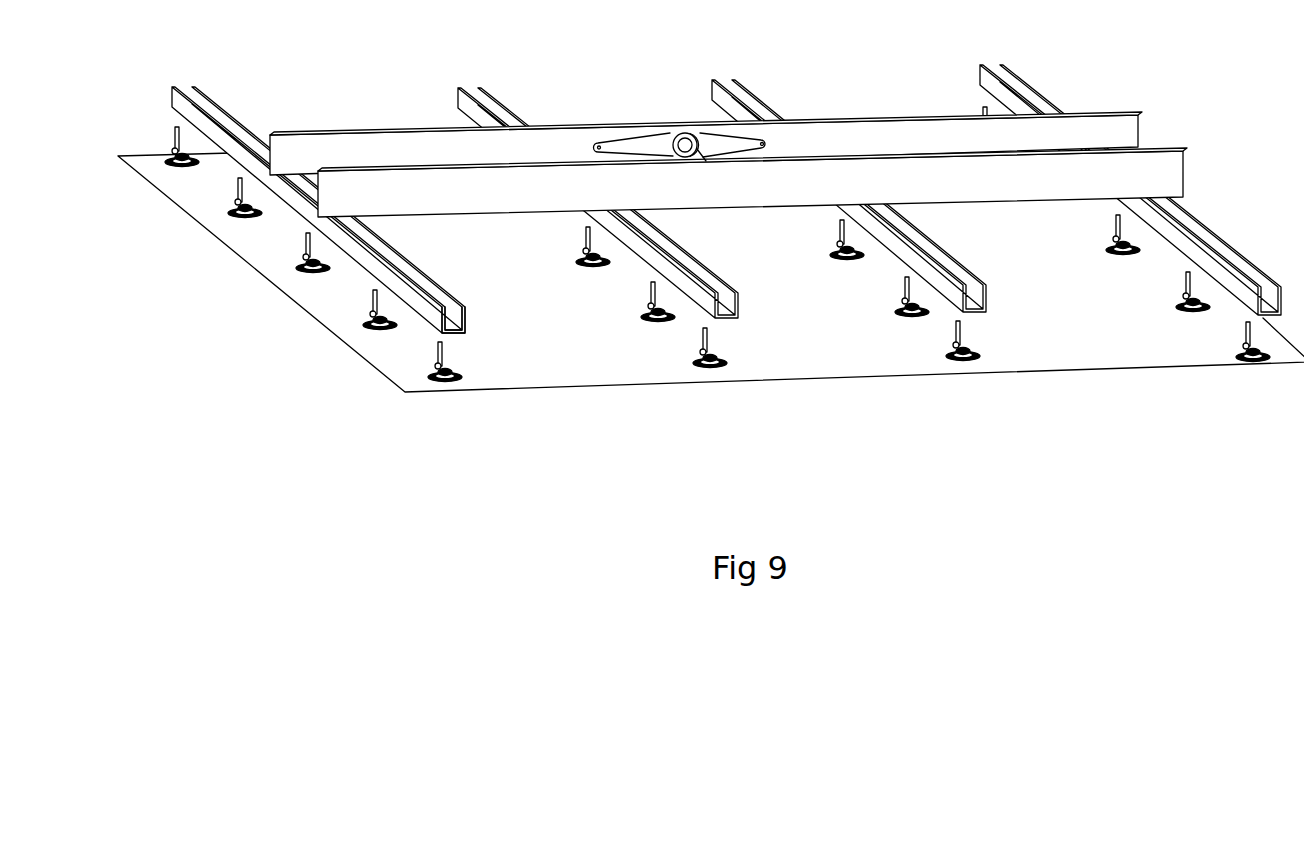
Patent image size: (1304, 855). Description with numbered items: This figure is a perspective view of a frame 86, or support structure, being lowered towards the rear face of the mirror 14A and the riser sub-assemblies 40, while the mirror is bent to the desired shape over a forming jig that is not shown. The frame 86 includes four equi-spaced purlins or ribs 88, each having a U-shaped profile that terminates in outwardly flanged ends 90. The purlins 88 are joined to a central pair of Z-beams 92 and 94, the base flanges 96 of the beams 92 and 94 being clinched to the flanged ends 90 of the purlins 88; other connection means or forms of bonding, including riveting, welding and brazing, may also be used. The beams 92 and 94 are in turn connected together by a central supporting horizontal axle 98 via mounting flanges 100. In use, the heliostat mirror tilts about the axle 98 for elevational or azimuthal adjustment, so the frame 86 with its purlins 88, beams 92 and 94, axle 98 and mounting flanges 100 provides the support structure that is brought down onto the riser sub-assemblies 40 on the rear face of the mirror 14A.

The mirror 14A is at (823, 352).
The riser sub-assemblies 40 is at (453, 353).
The frame 86 is at (730, 200).
The purlins 88 is at (441, 271).
The outwardly flanged ends 90 is at (467, 305).
The Z-beam 92 is at (373, 133).
The Z-beam 94 is at (706, 202).
The base flanges 96 is at (507, 215).
The central supporting horizontal axle 98 is at (680, 158).
The mounting flanges 100 is at (677, 105).